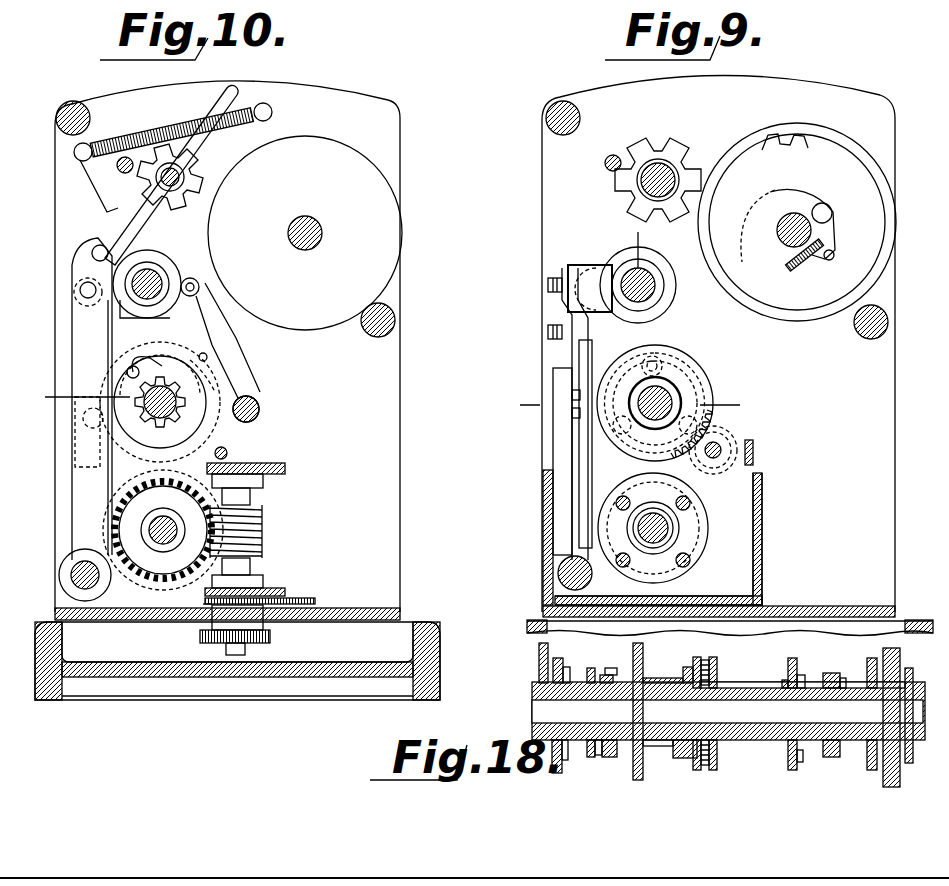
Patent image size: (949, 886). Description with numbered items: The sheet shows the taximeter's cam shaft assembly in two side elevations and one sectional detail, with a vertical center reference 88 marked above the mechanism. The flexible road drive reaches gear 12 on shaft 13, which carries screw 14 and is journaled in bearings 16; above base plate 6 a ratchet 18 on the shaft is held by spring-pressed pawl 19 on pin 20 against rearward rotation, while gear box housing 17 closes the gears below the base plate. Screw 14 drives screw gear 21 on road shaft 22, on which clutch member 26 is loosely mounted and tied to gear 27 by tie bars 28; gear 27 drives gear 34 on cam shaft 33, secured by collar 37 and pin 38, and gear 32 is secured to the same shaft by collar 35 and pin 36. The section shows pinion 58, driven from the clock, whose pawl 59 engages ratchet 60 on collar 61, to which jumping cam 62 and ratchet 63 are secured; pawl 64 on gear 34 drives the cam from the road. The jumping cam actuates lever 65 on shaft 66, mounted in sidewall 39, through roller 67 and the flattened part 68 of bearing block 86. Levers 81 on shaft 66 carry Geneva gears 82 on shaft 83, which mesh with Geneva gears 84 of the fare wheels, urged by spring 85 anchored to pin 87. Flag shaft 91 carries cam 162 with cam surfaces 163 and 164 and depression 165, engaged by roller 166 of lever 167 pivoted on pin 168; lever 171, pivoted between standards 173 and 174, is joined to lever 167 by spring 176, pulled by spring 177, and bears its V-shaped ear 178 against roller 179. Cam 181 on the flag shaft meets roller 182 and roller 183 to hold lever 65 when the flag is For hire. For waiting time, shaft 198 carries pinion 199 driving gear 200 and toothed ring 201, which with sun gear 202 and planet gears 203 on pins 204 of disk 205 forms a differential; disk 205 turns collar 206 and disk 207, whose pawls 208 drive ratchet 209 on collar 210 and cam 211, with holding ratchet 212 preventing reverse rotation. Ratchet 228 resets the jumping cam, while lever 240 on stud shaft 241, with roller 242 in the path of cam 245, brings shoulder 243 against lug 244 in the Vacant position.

In FIG. 10, the base plate 6 is at (382, 612).
In FIG. 9, the base plate 6 is at (829, 617).
In FIG. 10, the gear 12 is at (265, 640).
In FIG. 10, the shaft 13 is at (264, 497).
In FIG. 10, the screw 14 is at (263, 532).
In FIG. 10, the bearings 16 is at (263, 467).
In FIG. 10, the gear box housing 17 is at (316, 668).
In FIG. 9, the gear box housing 17 is at (527, 624).
In FIG. 10, the ratchet 18 is at (205, 606).
In FIG. 9, the ratchet 18 is at (638, 405).
In FIG. 10, the spring-pressed pawl 19 is at (286, 594).
In FIG. 10, the pin 20 is at (316, 600).
In FIG. 10, the screw gear 21 is at (163, 532).
In FIG. 10, the road shaft 22 is at (177, 505).
In FIG. 9, the road shaft 22 is at (655, 536).
In FIG. 18, the road shaft 22 is at (588, 760).
In FIG. 9, the clutch member 26 is at (702, 528).
In FIG. 10, the gear 27 is at (137, 598).
In FIG. 9, the tie bars 28 is at (690, 562).
In FIG. 18, the gear 32 is at (874, 705).
In FIG. 10, the cam shaft 33 is at (160, 410).
In FIG. 9, the cam shaft 33 is at (648, 420).
In FIG. 18, the cam shaft 33 is at (748, 713).
In FIG. 10, the gear 34 is at (127, 352).
In FIG. 18, the gear 34 is at (650, 709).
In FIG. 18, the collar 35 is at (843, 713).
In FIG. 18, the pin 36 is at (858, 713).
In FIG. 18, the collar 37 is at (668, 672).
In FIG. 18, the pin 38 is at (640, 713).
In FIG. 10, the sidewall 39 is at (305, 259).
In FIG. 9, the sidewall 39 is at (895, 408).
In FIG. 18, the pinion 58 is at (559, 659).
In FIG. 18, the pawl 59 is at (576, 666).
In FIG. 18, the ratchet 60 is at (569, 757).
In FIG. 18, the collar 61 is at (583, 697).
In FIG. 10, the jumping cam 62 is at (160, 402).
In FIG. 18, the jumping cam 62 is at (608, 682).
In FIG. 18, the ratchet 63 is at (617, 752).
In FIG. 18, the pawl 64 is at (624, 668).
In FIG. 10, the lever 65 is at (77, 399).
In FIG. 10, the shaft 66 is at (62, 583).
In FIG. 9, the shaft 66 is at (558, 575).
In FIG. 10, the roller 67 is at (78, 428).
In FIG. 10, the flattened part 68 is at (76, 398).
In FIG. 10, the levers 81 is at (85, 214).
In FIG. 10, the Geneva gears 82 is at (200, 168).
In FIG. 9, the Geneva gears 82 is at (688, 158).
In FIG. 9, the shaft 83 is at (642, 186).
In FIG. 9, the Geneva gears 84 is at (797, 222).
In FIG. 10, the spring 85 is at (163, 134).
In FIG. 10, the bearing block 86 is at (72, 450).
In FIG. 10, the pin 87 is at (270, 113).
In FIG. 10, the center line 88 is at (150, 62).
In FIG. 9, the center line 88 is at (638, 95).
In FIG. 10, the flag shaft 91 is at (166, 290).
In FIG. 9, the flag shaft 91 is at (636, 302).
In FIG. 9, the cam 162 is at (692, 316).
In FIG. 9, the cam surface 163 is at (676, 292).
In FIG. 9, the cam surface 164 is at (594, 268).
In FIG. 9, the depression 165 is at (657, 264).
In FIG. 9, the roller 166 is at (576, 268).
In FIG. 9, the lever 167 is at (566, 306).
In FIG. 9, the pin 168 is at (560, 528).
In FIG. 9, the lever 171 is at (578, 358).
In FIG. 9, the standard 173 is at (546, 503).
In FIG. 9, the standard 174 is at (763, 527).
In FIG. 9, the spring 176 is at (546, 342).
In FIG. 9, the spring 177 is at (546, 288).
In FIG. 9, the V-shaped ear 178 is at (574, 394).
In FIG. 9, the roller 179 is at (574, 410).
In FIG. 10, the cam 181 is at (171, 175).
In FIG. 10, the roller 182 is at (72, 268).
In FIG. 10, the roller 183 is at (72, 300).
In FIG. 10, the shaft 198 is at (228, 455).
In FIG. 9, the shaft 198 is at (712, 458).
In FIG. 9, the pinion 199 is at (740, 430).
In FIG. 9, the gear 200 is at (700, 413).
In FIG. 18, the gear 200 is at (690, 748).
In FIG. 18, the toothed ring 201 is at (705, 658).
In FIG. 9, the sun gear 202 is at (705, 382).
In FIG. 18, the sun gear 202 is at (688, 742).
In FIG. 9, the planet gears 203 is at (690, 362).
In FIG. 18, the planet gears 203 is at (705, 770).
In FIG. 9, the pins 204 is at (660, 384).
In FIG. 18, the pins 204 is at (739, 678).
In FIG. 18, the disk 205 is at (717, 756).
In FIG. 18, the collar 206 is at (738, 694).
In FIG. 18, the disk 207 is at (788, 668).
In FIG. 18, the pawls 208 is at (798, 764).
In FIG. 18, the ratchet 209 is at (820, 671).
In FIG. 18, the collar 210 is at (815, 683).
In FIG. 18, the cam 211 is at (822, 758).
In FIG. 18, the holding ratchet 212 is at (843, 672).
In FIG. 10, the ratchet 228 is at (160, 432).
In FIG. 18, the ratchet 228 is at (599, 760).
In FIG. 10, the lever 240 is at (222, 298).
In FIG. 10, the stud shaft 241 is at (260, 408).
In FIG. 10, the roller 242 is at (201, 287).
In FIG. 10, the shoulder 243 is at (215, 376).
In FIG. 10, the lug 244 is at (205, 353).
In FIG. 10, the cam 245 is at (165, 318).